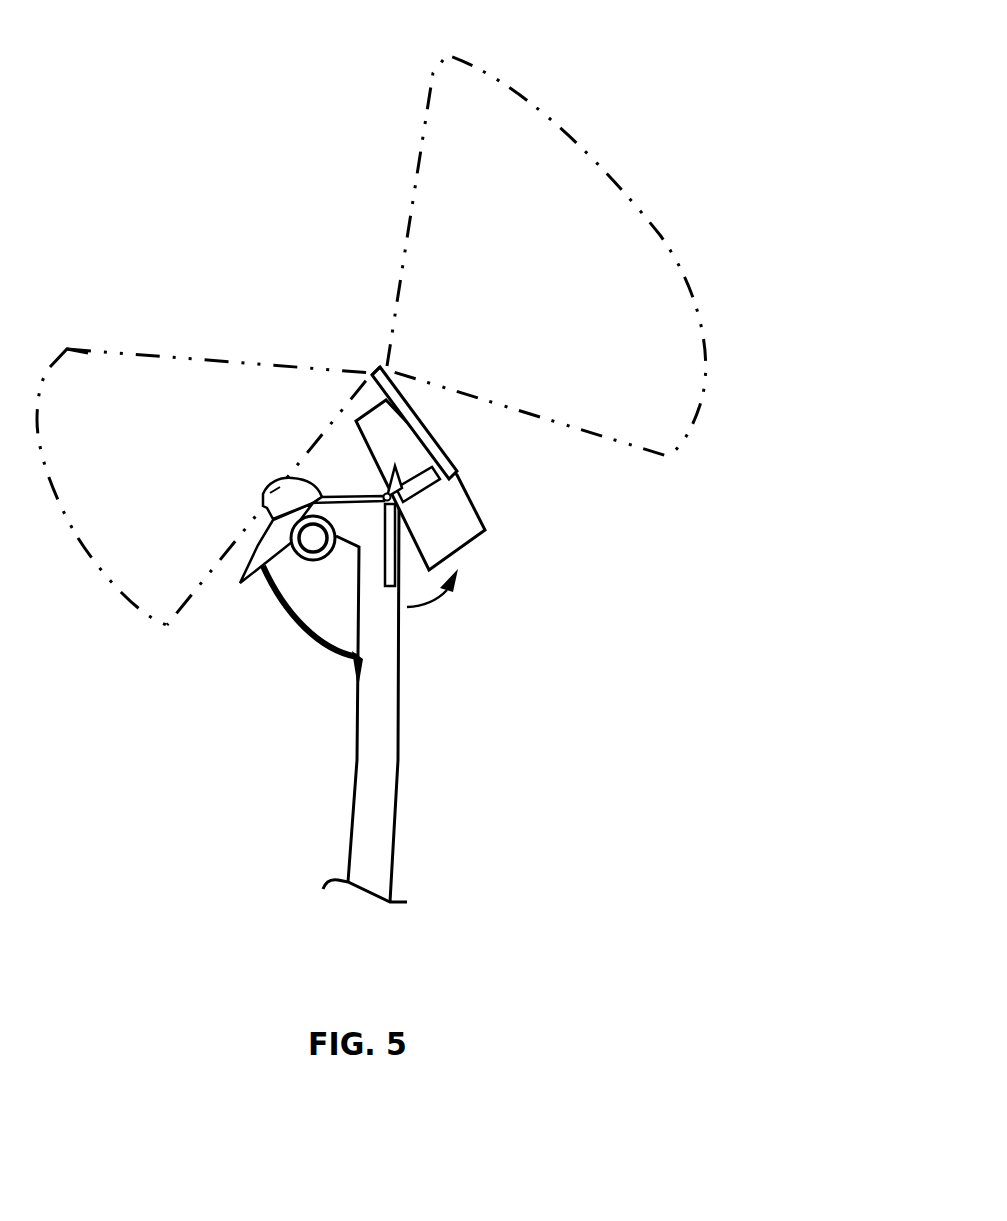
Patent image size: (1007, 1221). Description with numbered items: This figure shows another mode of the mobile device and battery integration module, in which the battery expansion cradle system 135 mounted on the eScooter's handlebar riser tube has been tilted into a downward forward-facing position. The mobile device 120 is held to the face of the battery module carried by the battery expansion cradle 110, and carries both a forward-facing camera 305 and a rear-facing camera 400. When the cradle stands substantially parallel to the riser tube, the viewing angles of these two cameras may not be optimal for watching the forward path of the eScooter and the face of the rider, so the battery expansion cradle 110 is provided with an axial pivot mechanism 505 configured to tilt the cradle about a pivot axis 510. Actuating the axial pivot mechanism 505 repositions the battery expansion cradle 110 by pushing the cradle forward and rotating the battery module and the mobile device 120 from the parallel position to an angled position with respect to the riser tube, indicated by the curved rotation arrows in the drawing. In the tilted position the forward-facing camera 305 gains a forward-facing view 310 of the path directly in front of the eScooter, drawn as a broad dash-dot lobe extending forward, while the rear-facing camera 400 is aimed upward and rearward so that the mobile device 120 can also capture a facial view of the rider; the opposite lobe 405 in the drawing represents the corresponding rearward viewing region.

The battery expansion cradle 110 is at (385, 494).
The mobile device 120 is at (417, 414).
The battery expansion cradle system 135 is at (440, 710).
The forward-facing camera 305 is at (371, 375).
The forward-facing view 310 is at (88, 353).
The rear-facing camera 400 is at (384, 368).
The range of motion 405 is at (518, 99).
The axial pivot mechanism 505 is at (410, 560).
The pivot axis 510 is at (377, 485).